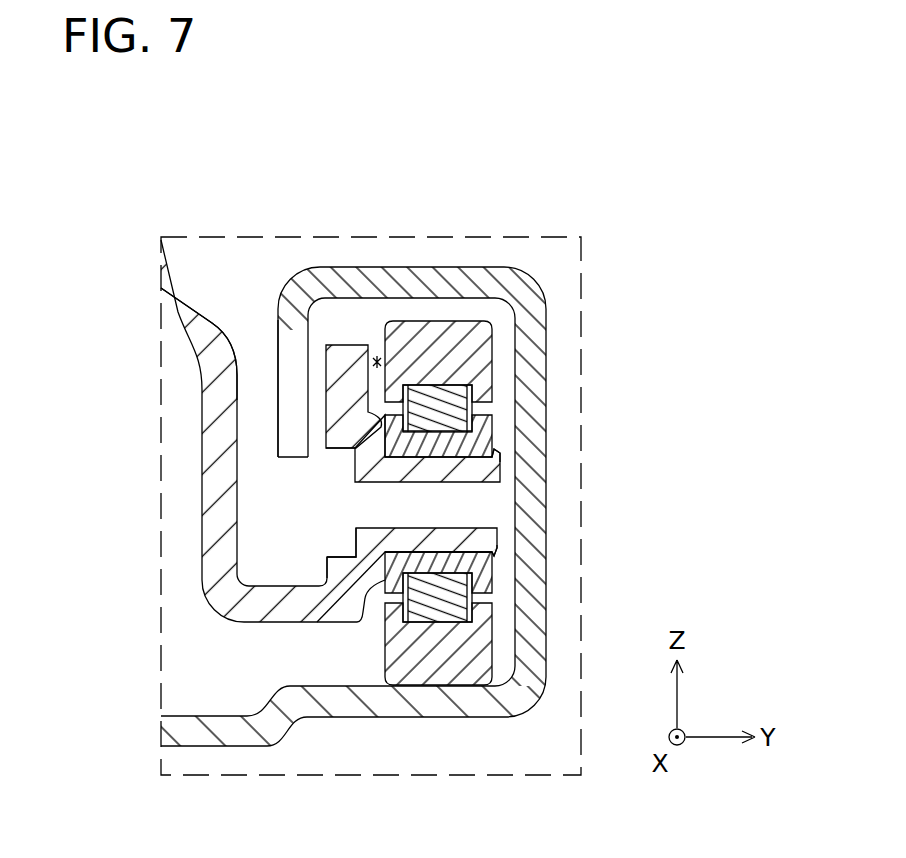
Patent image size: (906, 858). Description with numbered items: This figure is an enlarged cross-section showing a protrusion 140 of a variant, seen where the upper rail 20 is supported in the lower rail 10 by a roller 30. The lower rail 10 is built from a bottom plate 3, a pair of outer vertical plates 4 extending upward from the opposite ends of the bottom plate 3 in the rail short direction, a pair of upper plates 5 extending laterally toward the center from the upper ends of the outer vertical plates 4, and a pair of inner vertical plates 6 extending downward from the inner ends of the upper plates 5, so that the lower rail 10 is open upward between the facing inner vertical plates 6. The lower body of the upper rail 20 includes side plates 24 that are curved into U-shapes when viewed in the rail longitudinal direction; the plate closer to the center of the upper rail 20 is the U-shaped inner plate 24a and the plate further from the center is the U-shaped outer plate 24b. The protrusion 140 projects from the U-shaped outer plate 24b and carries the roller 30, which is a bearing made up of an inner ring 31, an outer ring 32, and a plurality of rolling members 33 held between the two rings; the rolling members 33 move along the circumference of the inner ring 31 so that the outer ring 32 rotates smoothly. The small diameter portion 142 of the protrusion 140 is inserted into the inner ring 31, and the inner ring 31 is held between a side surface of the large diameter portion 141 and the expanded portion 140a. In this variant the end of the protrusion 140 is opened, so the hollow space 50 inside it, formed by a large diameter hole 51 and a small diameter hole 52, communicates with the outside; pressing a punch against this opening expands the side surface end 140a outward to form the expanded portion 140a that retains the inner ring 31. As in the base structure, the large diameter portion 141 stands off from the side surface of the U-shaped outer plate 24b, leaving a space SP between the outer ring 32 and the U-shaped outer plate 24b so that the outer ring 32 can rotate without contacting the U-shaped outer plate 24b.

The bottom plate 3 is at (445, 710).
The outer vertical plate 4 is at (547, 635).
The upper plate 5 is at (407, 272).
The inner vertical plate 6 is at (278, 421).
The lower rail 10 is at (547, 265).
The upper rail 20 is at (178, 351).
The side plate 24 is at (220, 198).
The U-shaped inner plate 24a is at (240, 377).
The U-shaped outer plate 24b is at (347, 343).
The roller 30 is at (538, 503).
The inner ring 31 is at (493, 427).
The outer ring 32 is at (493, 353).
The rolling members 33 is at (493, 407).
The hollow space 50 is at (212, 513).
The large diameter hole 51 is at (338, 450).
The small diameter hole 52 is at (390, 482).
The protrusion 140 is at (498, 542).
The expanded portion 140a is at (498, 452).
The large diameter portion 141 is at (380, 583).
The small diameter portion 142 is at (420, 545).
The space SP is at (377, 355).